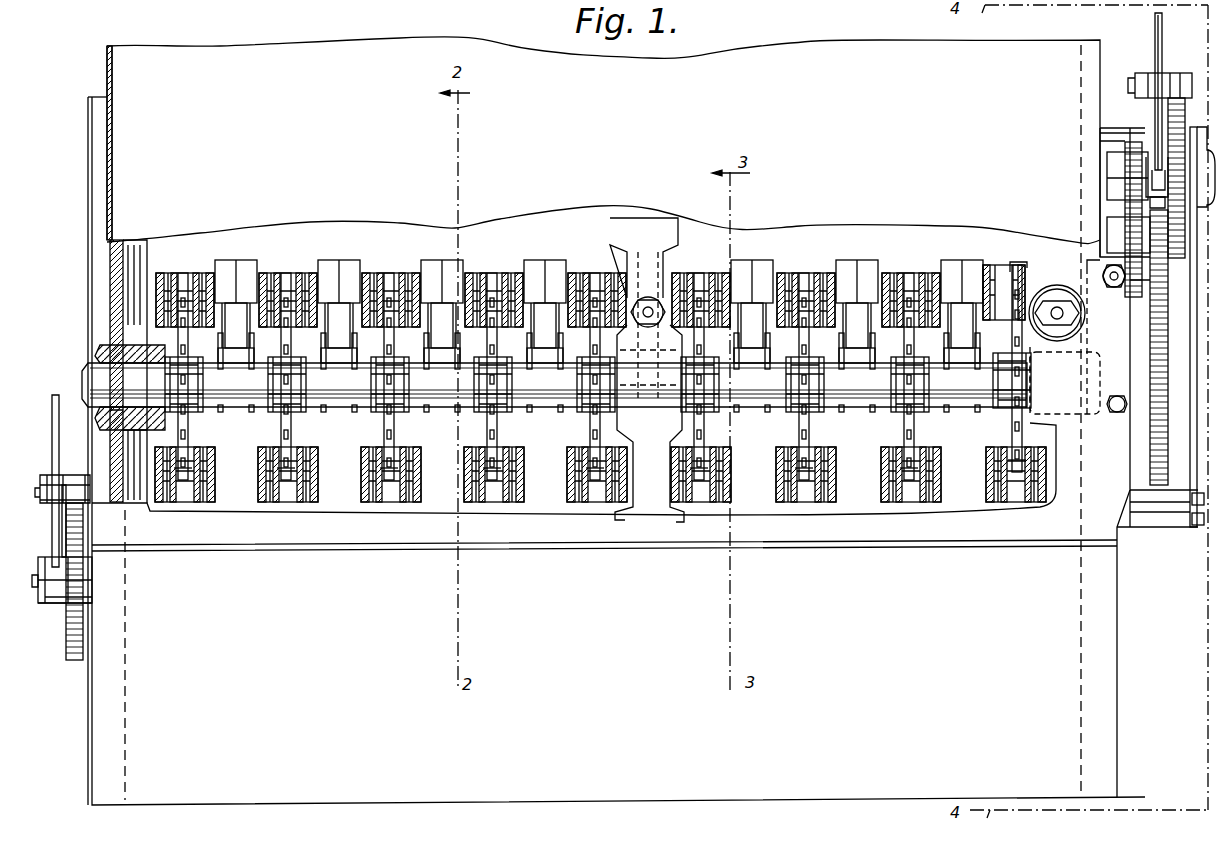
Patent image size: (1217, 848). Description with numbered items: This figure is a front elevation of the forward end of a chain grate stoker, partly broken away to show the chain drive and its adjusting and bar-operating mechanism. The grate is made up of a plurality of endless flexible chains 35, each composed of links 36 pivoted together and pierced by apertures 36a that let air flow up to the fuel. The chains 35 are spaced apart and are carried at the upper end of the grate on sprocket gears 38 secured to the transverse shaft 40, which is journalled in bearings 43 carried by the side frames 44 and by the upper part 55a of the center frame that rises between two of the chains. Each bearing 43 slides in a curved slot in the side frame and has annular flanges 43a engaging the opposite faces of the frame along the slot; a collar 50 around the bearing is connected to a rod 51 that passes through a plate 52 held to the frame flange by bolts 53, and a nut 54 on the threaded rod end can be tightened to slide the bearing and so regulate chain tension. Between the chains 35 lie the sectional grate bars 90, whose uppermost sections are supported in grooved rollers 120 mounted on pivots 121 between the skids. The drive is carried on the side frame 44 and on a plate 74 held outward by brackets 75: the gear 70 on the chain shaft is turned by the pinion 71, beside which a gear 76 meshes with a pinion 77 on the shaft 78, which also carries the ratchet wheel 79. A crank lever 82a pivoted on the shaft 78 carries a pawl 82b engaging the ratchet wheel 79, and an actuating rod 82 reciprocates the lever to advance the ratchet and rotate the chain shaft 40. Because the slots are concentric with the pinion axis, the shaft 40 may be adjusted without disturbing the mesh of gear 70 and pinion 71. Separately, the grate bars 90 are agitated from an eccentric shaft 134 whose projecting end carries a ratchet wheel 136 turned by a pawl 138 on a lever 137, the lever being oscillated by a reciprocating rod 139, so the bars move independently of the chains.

The endless flexible chain 35 is at (700, 517).
The link 36 is at (378, 273).
The aperture 36a is at (505, 273).
The sprocket gear 38 is at (291, 470).
The transverse shaft 40 is at (142, 343).
The bearing 43 is at (112, 350).
The annular flange 43a is at (110, 428).
The side frame 44 is at (86, 258).
The collar 50 is at (128, 348).
The rod 51 is at (1055, 323).
The plate 52 is at (1062, 405).
The bolt 53 is at (1115, 412).
The nut 54 is at (1048, 290).
The center frame part 55a is at (655, 522).
The gear 70 is at (1160, 368).
The pinion 71 is at (1152, 247).
The plate 74 is at (1165, 487).
The bracket 75 is at (1106, 128).
The gear 76 is at (1082, 280).
The pinion 77 is at (1130, 210).
The shaft 78 is at (1112, 178).
The ratchet wheel 79 is at (1172, 112).
The actuating rod 82 is at (1155, 22).
The crank lever 82a is at (1152, 175).
The pawl 82b is at (1165, 80).
The sectional grate bar 90 is at (234, 258).
The grooved roller 120 is at (242, 360).
The pivot 121 is at (352, 355).
The shaft 134 is at (92, 578).
The ratchet wheel 136 is at (83, 655).
The lever 137 is at (72, 596).
The pawl 138 is at (85, 470).
The rod 139 is at (55, 395).